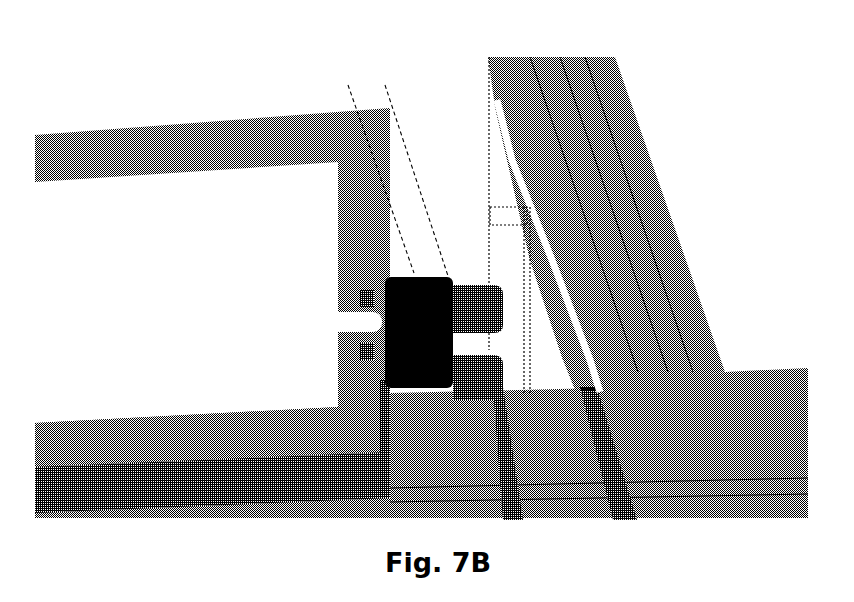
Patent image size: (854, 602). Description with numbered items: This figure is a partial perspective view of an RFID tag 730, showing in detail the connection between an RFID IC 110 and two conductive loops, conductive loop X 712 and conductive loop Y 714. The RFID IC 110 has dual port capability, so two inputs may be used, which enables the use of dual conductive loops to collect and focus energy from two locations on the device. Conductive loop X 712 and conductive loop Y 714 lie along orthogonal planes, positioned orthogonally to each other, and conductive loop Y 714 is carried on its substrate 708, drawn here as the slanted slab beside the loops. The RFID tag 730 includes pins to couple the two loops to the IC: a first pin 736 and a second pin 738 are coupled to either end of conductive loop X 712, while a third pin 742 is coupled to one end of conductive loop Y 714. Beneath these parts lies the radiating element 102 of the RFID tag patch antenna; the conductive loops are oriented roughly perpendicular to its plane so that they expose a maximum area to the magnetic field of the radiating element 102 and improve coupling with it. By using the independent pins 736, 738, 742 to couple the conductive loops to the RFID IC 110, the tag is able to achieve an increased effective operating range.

The RFID tag 730 is at (58, 80).
The conductive loop X 712 is at (197, 468).
The RFID IC 110 is at (388, 280).
The first pin 736 is at (370, 298).
The second pin 738 is at (370, 353).
The conductive loop Y 714 is at (505, 160).
The third pin 742 is at (462, 285).
The substrate 708 is at (619, 288).
The radiating element 102 is at (421, 360).